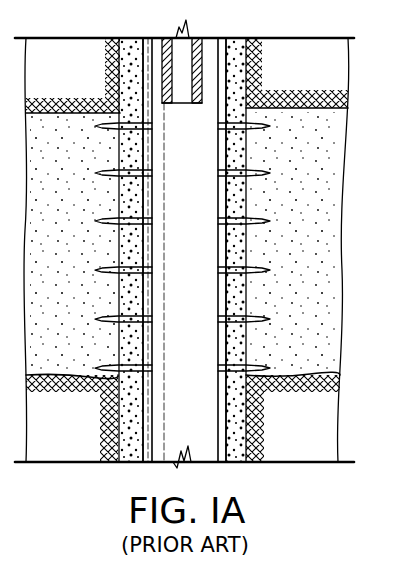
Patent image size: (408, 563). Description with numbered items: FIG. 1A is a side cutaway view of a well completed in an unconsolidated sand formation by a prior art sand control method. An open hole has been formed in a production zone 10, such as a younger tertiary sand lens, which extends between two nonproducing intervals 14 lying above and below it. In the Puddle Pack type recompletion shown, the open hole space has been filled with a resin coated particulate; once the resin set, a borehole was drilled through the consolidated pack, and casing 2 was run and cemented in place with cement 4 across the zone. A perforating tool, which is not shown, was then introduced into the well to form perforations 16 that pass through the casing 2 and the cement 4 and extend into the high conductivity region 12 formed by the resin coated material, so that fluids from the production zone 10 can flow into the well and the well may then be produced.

The casing 2 is at (218, 135).
The cement 4 is at (241, 193).
The production zone 10 is at (317, 138).
The high conductivity region 12 is at (264, 345).
The nonproducing intervals 14 is at (301, 42).
The perforations 16 is at (258, 220).